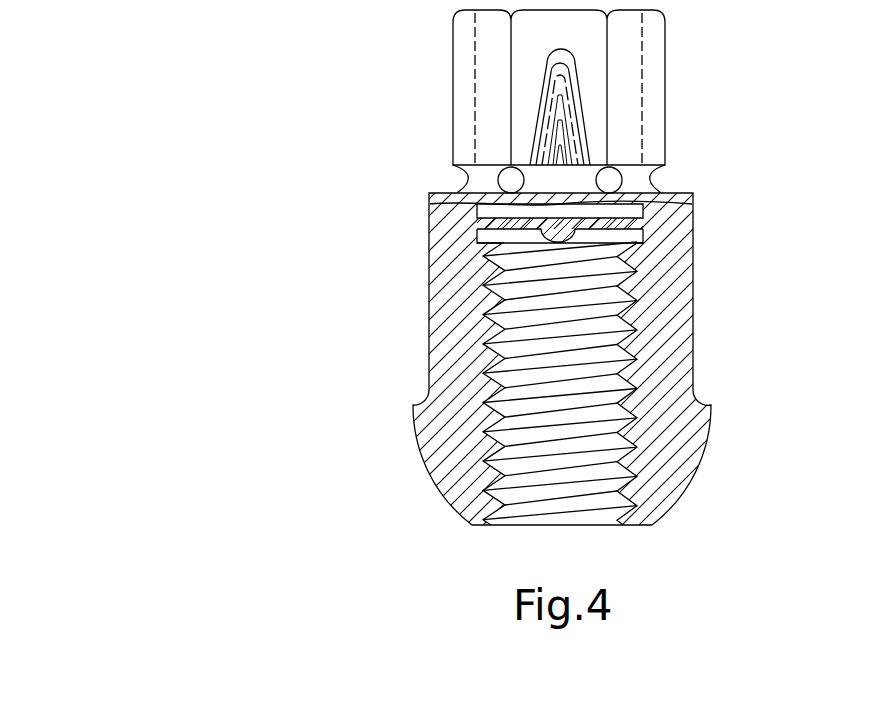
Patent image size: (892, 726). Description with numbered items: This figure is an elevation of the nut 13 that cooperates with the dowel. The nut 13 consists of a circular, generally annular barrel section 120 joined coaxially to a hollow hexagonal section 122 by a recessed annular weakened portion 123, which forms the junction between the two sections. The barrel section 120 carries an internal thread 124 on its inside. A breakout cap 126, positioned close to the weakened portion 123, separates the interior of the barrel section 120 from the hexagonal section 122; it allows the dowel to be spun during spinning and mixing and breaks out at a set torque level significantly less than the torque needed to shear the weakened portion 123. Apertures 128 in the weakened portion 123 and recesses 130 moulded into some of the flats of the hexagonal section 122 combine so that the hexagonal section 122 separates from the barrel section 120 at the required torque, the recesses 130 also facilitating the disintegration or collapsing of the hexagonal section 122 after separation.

The nut 13 is at (183, 225).
The barrel section 120 is at (453, 349).
The hexagonal section 122 is at (653, 72).
The weakened portion 123 is at (468, 175).
The internal thread 124 is at (537, 510).
The breakout cap 126 is at (613, 223).
The apertures 128 is at (622, 180).
The recesses 130 is at (541, 92).